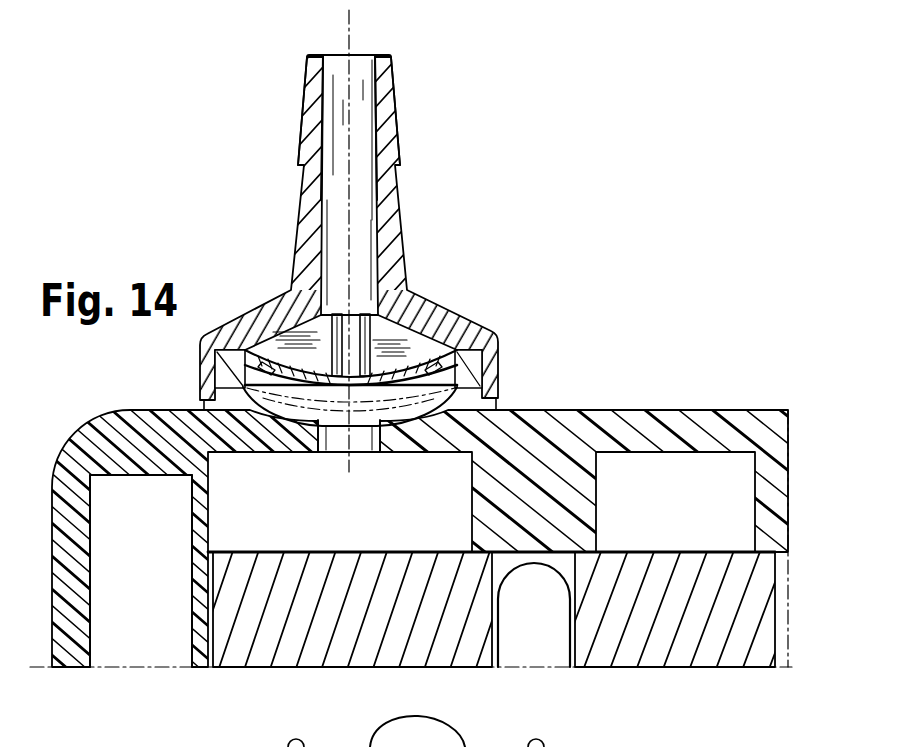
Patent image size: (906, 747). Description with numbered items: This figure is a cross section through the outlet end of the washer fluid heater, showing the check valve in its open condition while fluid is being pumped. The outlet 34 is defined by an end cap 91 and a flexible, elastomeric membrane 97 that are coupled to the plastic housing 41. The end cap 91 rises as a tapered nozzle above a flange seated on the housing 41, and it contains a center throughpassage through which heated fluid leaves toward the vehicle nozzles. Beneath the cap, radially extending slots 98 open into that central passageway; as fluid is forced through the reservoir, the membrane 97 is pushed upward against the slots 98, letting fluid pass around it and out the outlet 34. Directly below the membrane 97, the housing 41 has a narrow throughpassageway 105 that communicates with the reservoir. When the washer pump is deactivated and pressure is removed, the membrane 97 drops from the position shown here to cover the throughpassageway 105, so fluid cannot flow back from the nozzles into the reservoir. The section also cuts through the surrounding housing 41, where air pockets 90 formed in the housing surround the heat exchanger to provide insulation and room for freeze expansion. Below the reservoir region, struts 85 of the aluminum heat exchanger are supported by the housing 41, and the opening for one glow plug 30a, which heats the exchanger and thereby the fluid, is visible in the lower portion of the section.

The outlet 34 is at (363, 55).
The housing 41 is at (560, 433).
The struts 85 is at (257, 622).
The air pockets 90 is at (135, 615).
The end cap 91 is at (452, 330).
The flexible membrane 97 is at (433, 368).
The radially extending slots 98 is at (365, 337).
The narrow throughpassageway 105 is at (330, 432).
The glow plug 30a is at (533, 630).